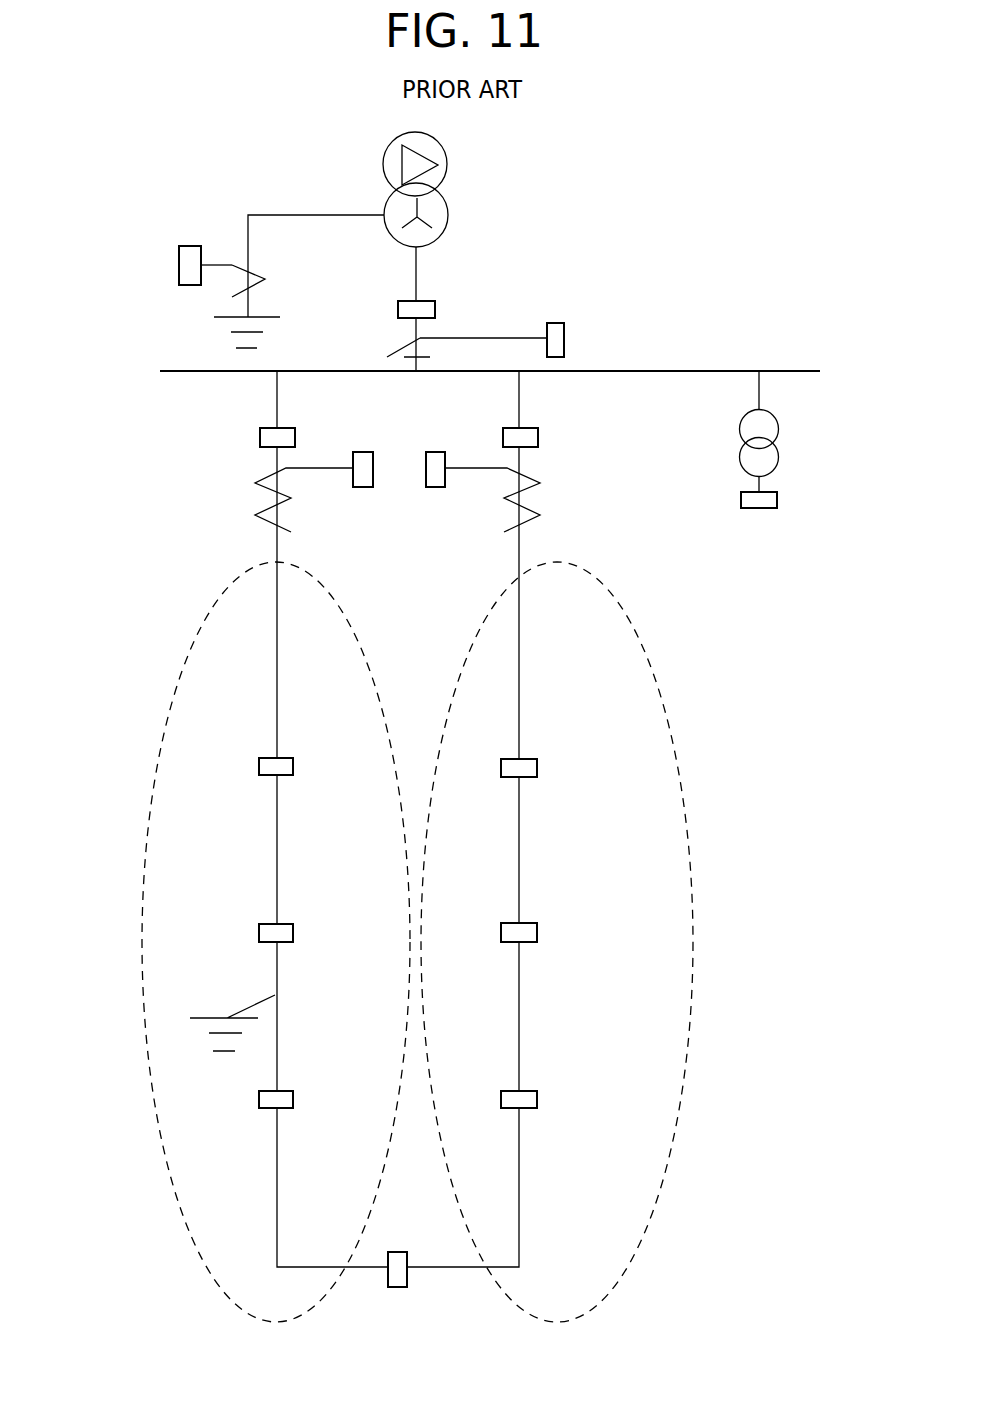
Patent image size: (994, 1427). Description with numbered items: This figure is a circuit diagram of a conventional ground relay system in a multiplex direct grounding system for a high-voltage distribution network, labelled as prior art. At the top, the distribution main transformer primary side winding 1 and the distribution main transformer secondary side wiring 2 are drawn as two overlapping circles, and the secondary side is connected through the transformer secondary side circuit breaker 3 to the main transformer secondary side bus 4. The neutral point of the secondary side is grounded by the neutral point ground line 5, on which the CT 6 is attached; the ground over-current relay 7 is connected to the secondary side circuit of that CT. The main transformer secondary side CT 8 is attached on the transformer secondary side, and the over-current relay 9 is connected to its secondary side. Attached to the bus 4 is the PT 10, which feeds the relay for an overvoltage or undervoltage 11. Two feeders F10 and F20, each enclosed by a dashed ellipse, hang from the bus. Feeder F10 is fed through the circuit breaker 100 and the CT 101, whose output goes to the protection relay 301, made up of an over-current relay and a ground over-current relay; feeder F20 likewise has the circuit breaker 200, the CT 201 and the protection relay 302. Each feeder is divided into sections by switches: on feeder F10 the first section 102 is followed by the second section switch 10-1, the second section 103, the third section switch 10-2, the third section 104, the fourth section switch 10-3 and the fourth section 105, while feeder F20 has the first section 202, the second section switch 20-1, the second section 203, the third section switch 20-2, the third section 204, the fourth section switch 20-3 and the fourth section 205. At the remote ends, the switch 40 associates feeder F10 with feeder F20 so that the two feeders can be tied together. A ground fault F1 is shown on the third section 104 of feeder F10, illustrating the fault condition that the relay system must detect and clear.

The distribution main transformer primary side winding 1 is at (448, 164).
The distribution main transformer secondary side wiring 2 is at (449, 215).
The transformer secondary side circuit breaker 3 is at (436, 307).
The main transformer secondary side bus 4 is at (645, 371).
The neutral point ground line 5 is at (298, 213).
The CT 6 is at (232, 265).
The ground over-current relay 7 is at (189, 246).
The main transformer secondary side CT 8 is at (395, 345).
The over-current relay 9 is at (556, 322).
The PT 10 is at (780, 451).
The relay for an overvoltage or undervoltage 11 is at (778, 497).
The circuit breaker 100 is at (288, 425).
The CT 101 is at (259, 478).
The first section 102 is at (278, 657).
The second section 103 is at (278, 833).
The third section 104 is at (278, 1010).
The fourth section 105 is at (278, 1202).
The second section switch 10-1 is at (283, 757).
The third section switch 10-2 is at (283, 923).
The fourth section switch 10-3 is at (283, 1090).
The circuit breaker 200 is at (527, 426).
The CT 201 is at (536, 478).
The first section 202 is at (520, 657).
The second section 203 is at (520, 833).
The third section 204 is at (520, 1010).
The fourth section 205 is at (520, 1202).
The second section switch 20-1 is at (524, 757).
The third section switch 20-2 is at (524, 923).
The fourth section switch 20-3 is at (524, 1090).
The protection relay 301 is at (362, 488).
The protection relay 302 is at (434, 488).
The switch 40 is at (398, 1252).
The ground fault F1 is at (213, 1023).
The feeder F10 is at (140, 922).
The feeder F20 is at (695, 927).